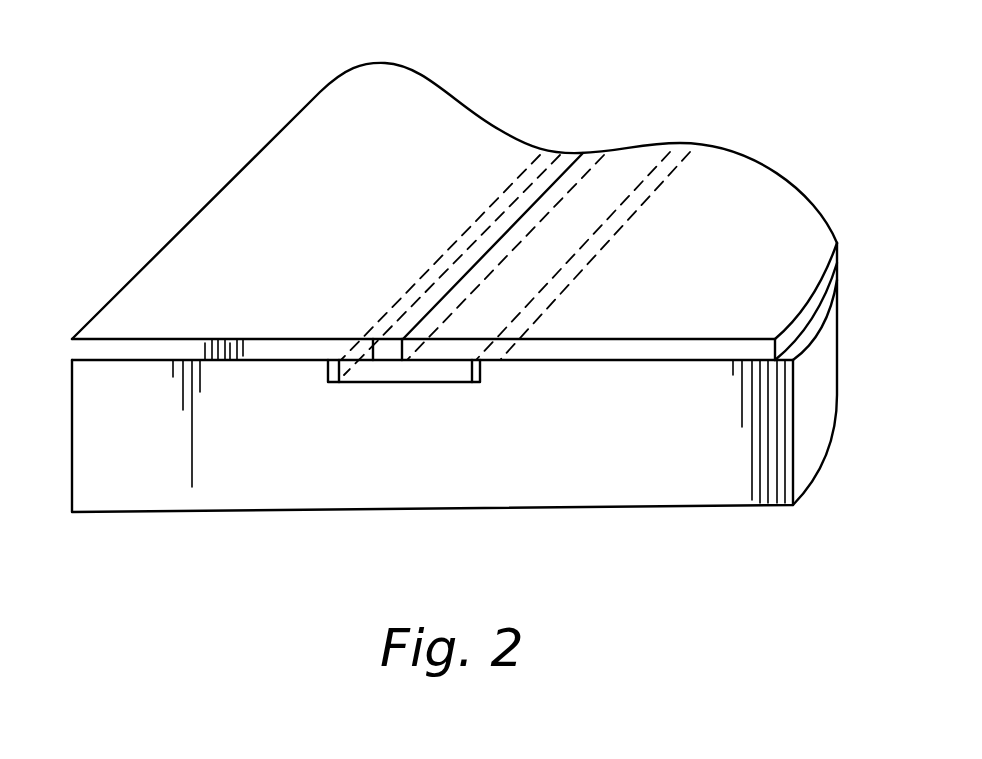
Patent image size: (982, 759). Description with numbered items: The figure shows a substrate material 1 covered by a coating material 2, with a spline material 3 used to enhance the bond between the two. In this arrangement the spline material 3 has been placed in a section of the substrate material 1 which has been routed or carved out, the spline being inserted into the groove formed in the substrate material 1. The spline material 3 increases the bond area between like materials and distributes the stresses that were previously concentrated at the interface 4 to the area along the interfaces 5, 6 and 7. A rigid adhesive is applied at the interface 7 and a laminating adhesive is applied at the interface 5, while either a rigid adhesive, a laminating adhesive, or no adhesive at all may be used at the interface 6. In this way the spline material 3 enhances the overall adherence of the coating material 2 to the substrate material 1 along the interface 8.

The substrate material 1 is at (222, 485).
The coating material 2 is at (202, 236).
The spline material 3 is at (433, 382).
The interface 4 is at (522, 215).
The interface 5 is at (360, 382).
The interface 6 is at (477, 373).
The interface 7 is at (373, 357).
The interface 8 is at (152, 362).